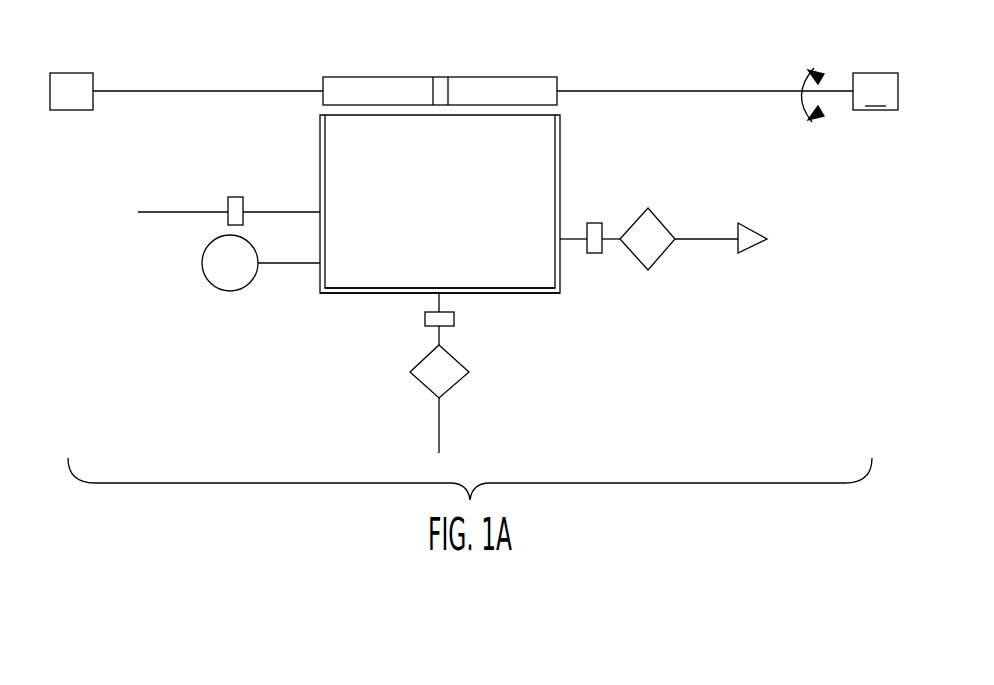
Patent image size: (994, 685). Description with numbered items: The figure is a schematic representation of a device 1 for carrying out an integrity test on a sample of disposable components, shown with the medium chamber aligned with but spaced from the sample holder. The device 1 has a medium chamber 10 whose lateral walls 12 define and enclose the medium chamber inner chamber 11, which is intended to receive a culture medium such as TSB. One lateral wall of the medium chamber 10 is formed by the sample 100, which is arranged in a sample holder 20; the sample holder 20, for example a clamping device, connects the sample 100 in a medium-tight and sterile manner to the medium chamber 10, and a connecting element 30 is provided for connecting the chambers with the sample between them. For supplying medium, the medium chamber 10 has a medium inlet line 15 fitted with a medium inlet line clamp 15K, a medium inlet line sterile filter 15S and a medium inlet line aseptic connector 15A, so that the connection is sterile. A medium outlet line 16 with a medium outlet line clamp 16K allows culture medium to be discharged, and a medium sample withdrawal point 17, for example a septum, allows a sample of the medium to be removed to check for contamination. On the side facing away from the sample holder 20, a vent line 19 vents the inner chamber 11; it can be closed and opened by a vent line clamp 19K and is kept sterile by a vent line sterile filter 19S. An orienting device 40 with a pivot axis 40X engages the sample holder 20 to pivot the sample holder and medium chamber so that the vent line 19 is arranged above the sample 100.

The device 1 is at (791, 412).
The medium chamber 10 is at (560, 293).
The medium chamber inner chamber 11 is at (449, 251).
The lateral wall 12 is at (367, 293).
The medium inlet line 15 is at (717, 241).
The medium inlet line clamp 15K is at (601, 256).
The medium inlet line sterile filter 15S is at (660, 233).
The medium inlet line aseptic connector 15A is at (770, 228).
The medium outlet line 16 is at (180, 212).
The medium outlet line clamp 16K is at (256, 200).
The medium sample withdrawal point 17 is at (230, 291).
The vent line 19 is at (440, 347).
The vent line clamp 19K is at (461, 322).
The vent line sterile filter 19S is at (424, 382).
The sample holder 20 is at (323, 80).
The connecting element 30 is at (557, 143).
The orienting device 40 is at (875, 91).
The pivot axis 40X is at (693, 92).
The sample 100 is at (557, 80).